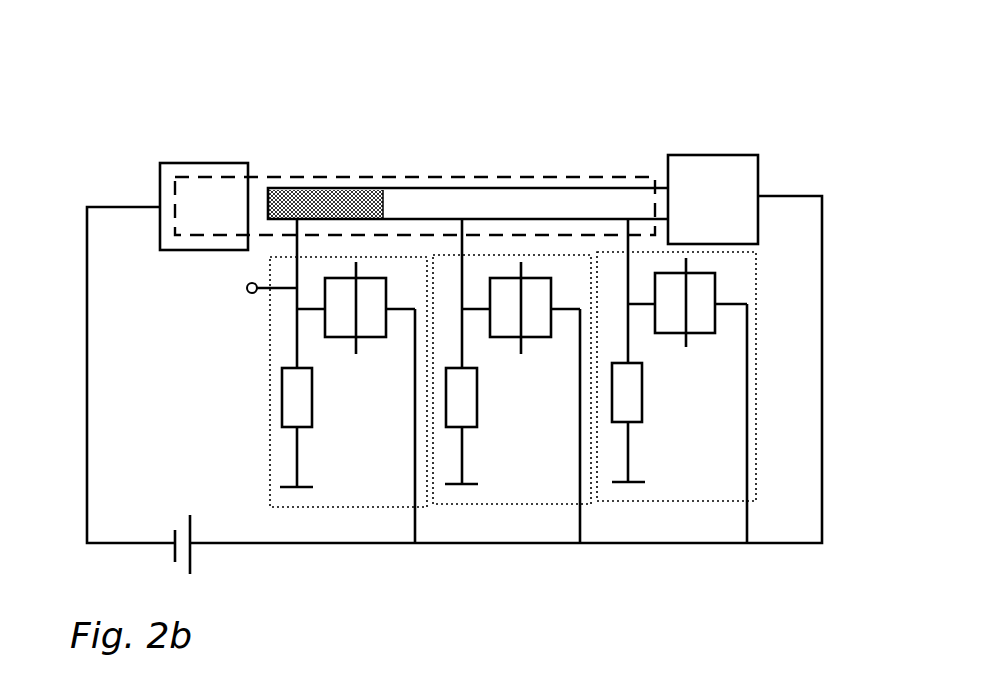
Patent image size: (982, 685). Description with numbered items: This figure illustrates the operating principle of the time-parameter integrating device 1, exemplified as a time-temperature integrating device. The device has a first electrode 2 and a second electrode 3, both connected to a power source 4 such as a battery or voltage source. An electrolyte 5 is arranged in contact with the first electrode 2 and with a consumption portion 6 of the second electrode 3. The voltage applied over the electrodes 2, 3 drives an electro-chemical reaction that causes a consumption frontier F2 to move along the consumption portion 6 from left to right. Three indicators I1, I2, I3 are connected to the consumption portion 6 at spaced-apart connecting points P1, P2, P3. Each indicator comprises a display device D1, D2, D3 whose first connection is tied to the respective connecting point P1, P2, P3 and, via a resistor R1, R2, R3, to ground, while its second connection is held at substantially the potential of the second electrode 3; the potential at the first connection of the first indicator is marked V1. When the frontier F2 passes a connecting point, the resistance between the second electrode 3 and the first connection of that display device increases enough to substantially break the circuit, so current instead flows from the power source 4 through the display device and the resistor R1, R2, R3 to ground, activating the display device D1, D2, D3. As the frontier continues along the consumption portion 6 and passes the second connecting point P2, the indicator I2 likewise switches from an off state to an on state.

The time-parameter integrating device 1 is at (97, 121).
The first electrode 2 is at (161, 190).
The second electrode 3 is at (758, 163).
The power source 4 is at (193, 552).
The electrolyte 5 is at (356, 178).
The consumption portion 6 is at (556, 188).
The consumption frontier F2 is at (388, 207).
The first connecting point P1 is at (298, 233).
The second connecting point P2 is at (465, 233).
The third connecting point P3 is at (631, 233).
The output voltage terminal V1 is at (252, 290).
The first display device D1 is at (370, 338).
The second display device D2 is at (535, 338).
The third display device D3 is at (700, 334).
The first resistor R1 is at (312, 398).
The second resistor R2 is at (477, 398).
The third resistor R3 is at (642, 392).
The first indicator I1 is at (345, 508).
The second indicator I2 is at (522, 505).
The third indicator I3 is at (672, 502).